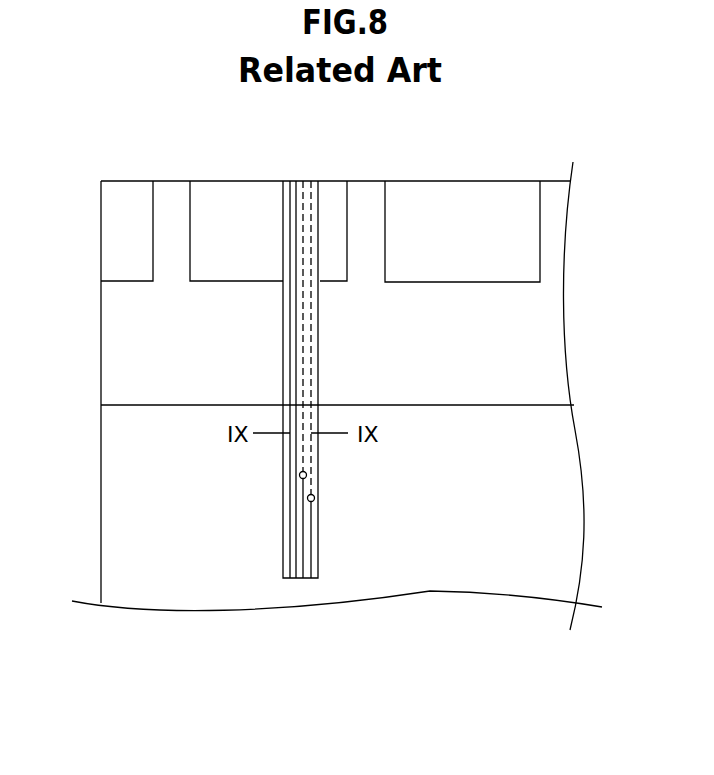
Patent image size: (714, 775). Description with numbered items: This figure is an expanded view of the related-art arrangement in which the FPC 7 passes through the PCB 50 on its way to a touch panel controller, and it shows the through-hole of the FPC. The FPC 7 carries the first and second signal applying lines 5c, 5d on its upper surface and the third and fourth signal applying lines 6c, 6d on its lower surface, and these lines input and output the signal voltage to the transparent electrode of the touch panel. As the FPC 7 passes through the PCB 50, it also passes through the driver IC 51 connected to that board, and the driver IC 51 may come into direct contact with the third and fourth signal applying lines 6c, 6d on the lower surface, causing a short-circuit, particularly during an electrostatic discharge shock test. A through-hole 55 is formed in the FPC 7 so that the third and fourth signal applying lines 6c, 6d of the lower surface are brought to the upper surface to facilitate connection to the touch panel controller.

The first signal applying line 5c is at (285, 181).
The second signal applying line 5d is at (307, 181).
The third signal applying line 6c is at (302, 578).
The fourth signal applying line 6d is at (312, 578).
The FPC 7 is at (320, 547).
The PCB 50 is at (468, 398).
The driver IC 51 is at (468, 188).
The through-hole 55 is at (316, 497).